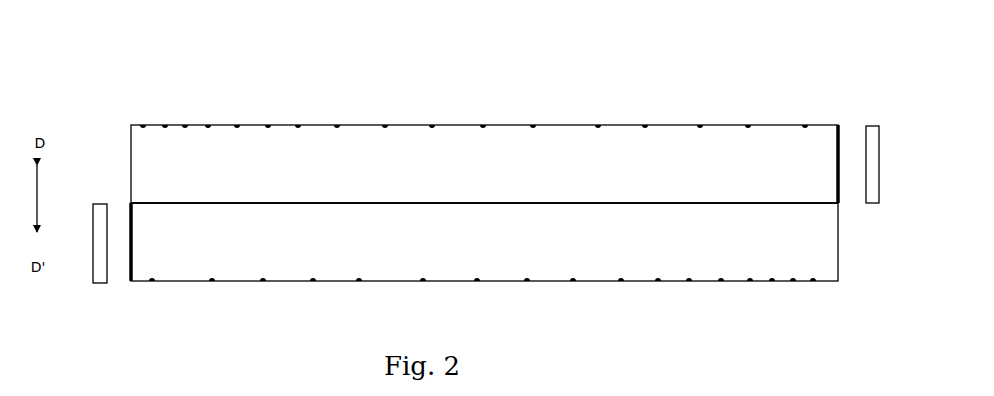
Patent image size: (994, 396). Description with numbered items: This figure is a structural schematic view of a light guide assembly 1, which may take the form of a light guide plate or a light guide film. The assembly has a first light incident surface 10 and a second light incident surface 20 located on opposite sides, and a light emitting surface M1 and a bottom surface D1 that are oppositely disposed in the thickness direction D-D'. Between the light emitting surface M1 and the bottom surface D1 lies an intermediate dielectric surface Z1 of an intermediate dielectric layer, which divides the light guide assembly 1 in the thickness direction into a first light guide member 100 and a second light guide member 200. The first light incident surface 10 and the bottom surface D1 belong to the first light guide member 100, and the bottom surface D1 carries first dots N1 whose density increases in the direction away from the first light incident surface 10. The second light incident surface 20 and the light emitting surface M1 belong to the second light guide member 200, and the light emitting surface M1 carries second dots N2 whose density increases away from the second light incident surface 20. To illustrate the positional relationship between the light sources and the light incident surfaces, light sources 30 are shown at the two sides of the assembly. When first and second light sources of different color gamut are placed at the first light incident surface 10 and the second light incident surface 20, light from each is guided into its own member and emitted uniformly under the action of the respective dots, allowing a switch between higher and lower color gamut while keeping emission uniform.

The light guide assembly 1 is at (168, 97).
The first light incident surface 10 is at (130, 230).
The second light incident surface 20 is at (840, 150).
The light sources 30 is at (879, 183).
The first light guide member 100 is at (350, 265).
The second light guide member 200 is at (377, 153).
The light emitting surface M1 is at (455, 125).
The second dots N2 is at (533, 125).
The intermediate dielectric surface Z1 is at (455, 205).
The bottom surface D1 is at (503, 284).
The first dots N1 is at (573, 284).